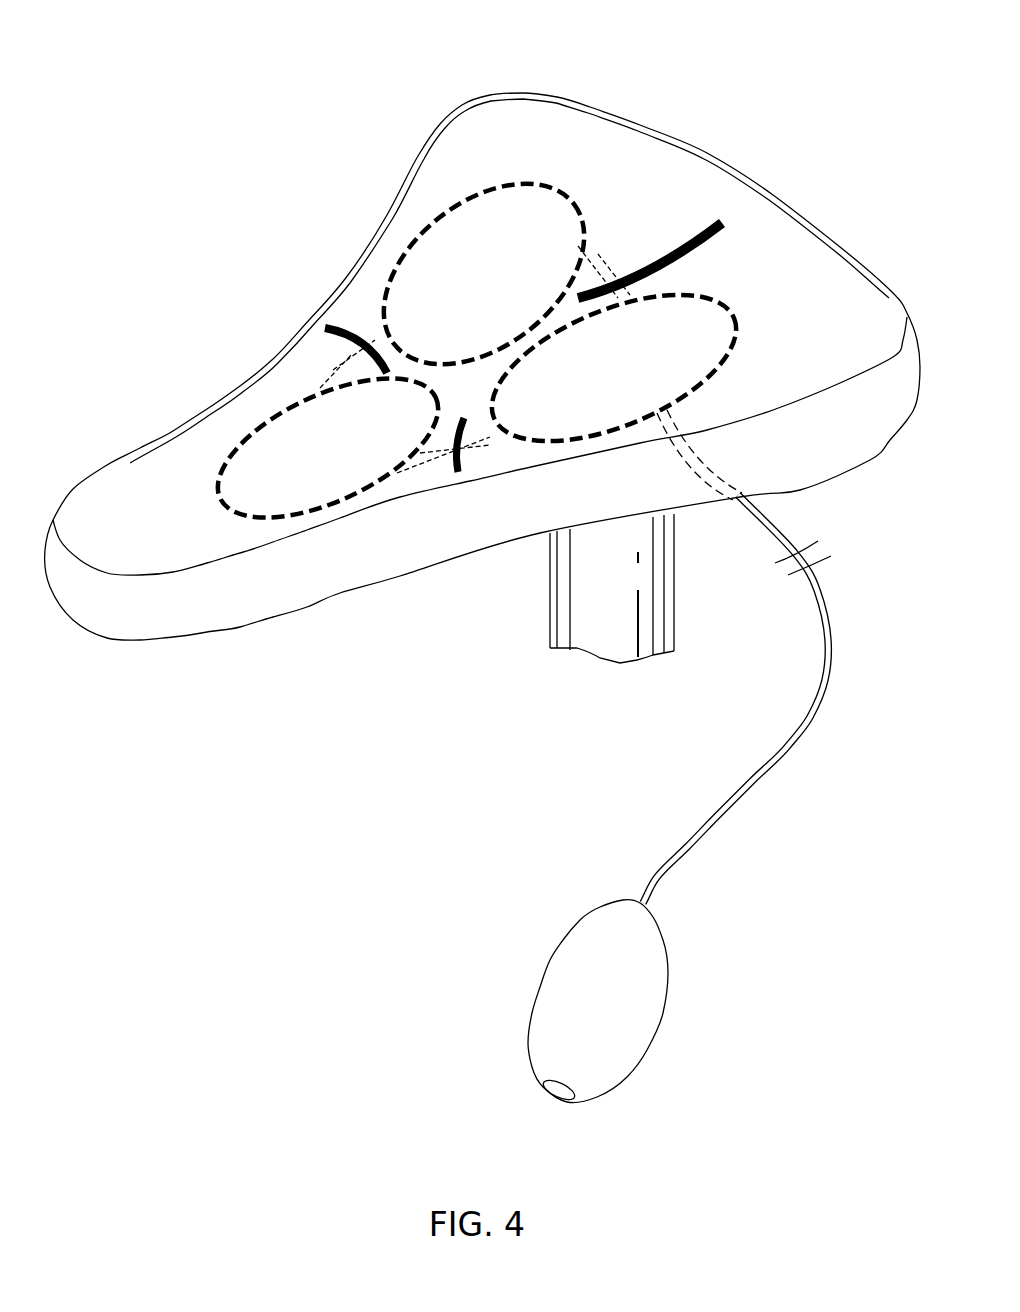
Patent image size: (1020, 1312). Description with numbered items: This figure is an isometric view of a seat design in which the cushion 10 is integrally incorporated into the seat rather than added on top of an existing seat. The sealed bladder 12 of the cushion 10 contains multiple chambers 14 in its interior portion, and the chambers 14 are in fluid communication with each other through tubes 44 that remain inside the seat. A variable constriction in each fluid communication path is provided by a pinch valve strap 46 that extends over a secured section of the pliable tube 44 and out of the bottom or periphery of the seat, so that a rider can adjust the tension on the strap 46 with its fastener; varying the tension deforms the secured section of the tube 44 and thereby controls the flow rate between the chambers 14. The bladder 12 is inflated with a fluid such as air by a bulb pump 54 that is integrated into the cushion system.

The cushion 10 is at (217, 103).
The sealed bladder 12 is at (624, 183).
The chambers 14 is at (423, 402).
The tube 44 is at (445, 450).
The pinch valve strap 46 is at (660, 278).
The bulb pump 54 is at (633, 1042).